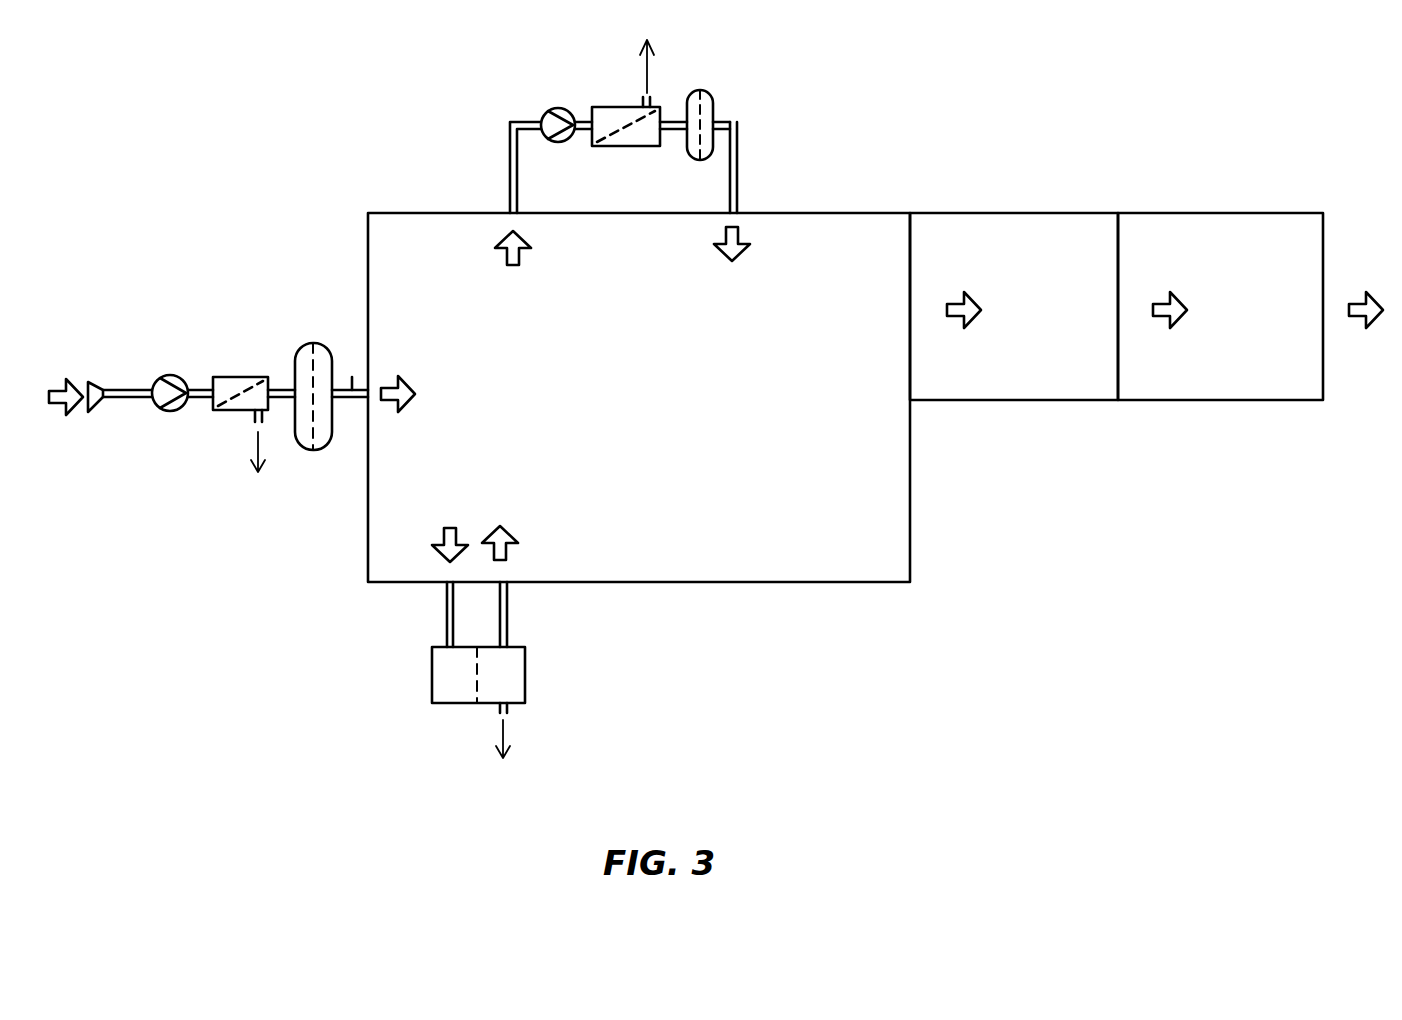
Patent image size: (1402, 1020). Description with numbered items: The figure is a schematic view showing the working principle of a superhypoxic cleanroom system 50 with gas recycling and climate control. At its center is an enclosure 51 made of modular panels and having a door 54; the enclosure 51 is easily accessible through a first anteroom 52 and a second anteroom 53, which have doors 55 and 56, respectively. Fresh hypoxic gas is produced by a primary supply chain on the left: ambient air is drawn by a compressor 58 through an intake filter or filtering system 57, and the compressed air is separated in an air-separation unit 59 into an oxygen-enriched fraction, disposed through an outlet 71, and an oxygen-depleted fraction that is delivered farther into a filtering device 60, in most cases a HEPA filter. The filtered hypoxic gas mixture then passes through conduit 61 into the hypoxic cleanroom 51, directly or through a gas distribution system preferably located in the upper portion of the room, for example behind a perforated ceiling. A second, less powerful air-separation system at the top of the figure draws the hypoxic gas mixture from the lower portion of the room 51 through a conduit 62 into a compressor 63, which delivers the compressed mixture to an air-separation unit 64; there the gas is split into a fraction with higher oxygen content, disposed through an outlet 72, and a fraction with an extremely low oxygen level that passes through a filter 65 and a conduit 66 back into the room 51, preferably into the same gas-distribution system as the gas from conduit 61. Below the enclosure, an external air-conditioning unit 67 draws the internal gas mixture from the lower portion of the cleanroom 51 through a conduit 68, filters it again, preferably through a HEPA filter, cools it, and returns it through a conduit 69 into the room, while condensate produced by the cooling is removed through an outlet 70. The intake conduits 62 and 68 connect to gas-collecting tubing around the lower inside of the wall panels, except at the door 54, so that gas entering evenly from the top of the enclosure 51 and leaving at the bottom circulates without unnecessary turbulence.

The superhypoxic cleanroom system 50 is at (242, 100).
The enclosure 51 is at (898, 500).
The anteroom 52 is at (1032, 225).
The anteroom 53 is at (1222, 225).
The door 54 is at (912, 228).
The door 55 is at (1120, 232).
The door 56 is at (1325, 237).
The intake filter 57 is at (100, 382).
The compressor 58 is at (168, 413).
The air-separation unit 59 is at (240, 377).
The filtering device 60 is at (303, 450).
The conduit 61 is at (352, 377).
The conduit 62 is at (510, 157).
The compressor 63 is at (553, 110).
The air-separation unit 64 is at (628, 137).
The filter 65 is at (710, 98).
The conduit 66 is at (738, 170).
The air-conditioning unit 67 is at (513, 672).
The conduit 68 is at (447, 600).
The conduit 69 is at (507, 607).
The outlet 70 is at (507, 713).
The outlet 71 is at (258, 422).
The outlet 72 is at (642, 98).